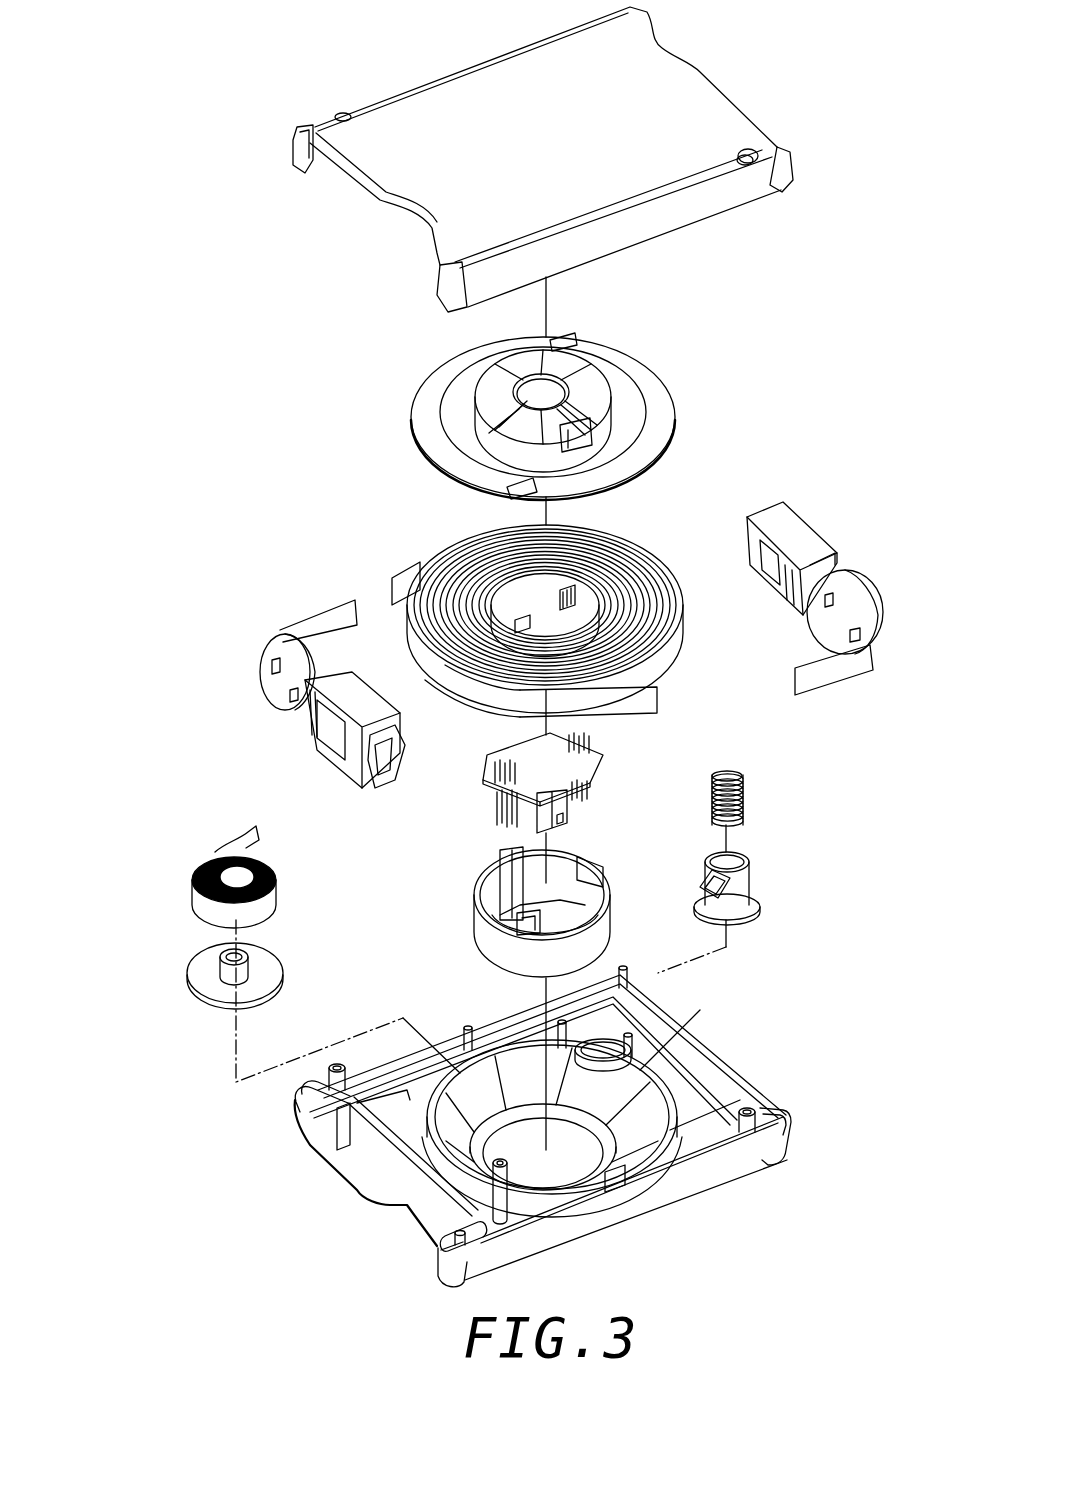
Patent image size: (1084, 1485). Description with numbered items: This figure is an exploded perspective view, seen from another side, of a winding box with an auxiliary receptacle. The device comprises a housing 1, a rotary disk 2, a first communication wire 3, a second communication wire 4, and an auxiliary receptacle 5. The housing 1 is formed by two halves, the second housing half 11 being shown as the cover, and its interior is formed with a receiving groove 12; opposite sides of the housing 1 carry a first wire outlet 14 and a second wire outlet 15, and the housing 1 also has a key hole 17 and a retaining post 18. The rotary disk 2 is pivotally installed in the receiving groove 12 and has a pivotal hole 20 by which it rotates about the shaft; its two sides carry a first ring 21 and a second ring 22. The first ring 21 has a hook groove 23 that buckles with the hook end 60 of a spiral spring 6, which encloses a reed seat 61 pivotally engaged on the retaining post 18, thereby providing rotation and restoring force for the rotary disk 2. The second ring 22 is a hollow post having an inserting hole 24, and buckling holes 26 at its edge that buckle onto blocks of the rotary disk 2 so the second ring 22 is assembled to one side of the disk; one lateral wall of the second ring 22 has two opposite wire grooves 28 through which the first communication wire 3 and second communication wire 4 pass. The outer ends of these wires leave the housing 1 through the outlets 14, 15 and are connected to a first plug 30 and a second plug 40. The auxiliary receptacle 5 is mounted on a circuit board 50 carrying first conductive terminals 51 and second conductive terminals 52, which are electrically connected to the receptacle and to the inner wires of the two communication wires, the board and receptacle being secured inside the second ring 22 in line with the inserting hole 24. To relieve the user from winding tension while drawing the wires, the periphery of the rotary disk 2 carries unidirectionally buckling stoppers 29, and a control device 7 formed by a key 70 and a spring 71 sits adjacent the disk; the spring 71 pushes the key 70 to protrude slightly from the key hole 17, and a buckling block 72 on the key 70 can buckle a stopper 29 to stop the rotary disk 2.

The housing 1 is at (525, 1121).
The rotary disk 2 is at (546, 419).
The first communication wire 3 is at (400, 580).
The second communication wire 4 is at (657, 697).
The auxiliary receptacle 5 is at (563, 820).
The spiral spring 6 is at (208, 842).
The control device 7 is at (784, 873).
The second housing half 11 is at (753, 113).
The receiving groove 12 is at (480, 1060).
The first wire outlet 14 is at (300, 1107).
The second wire outlet 15 is at (760, 1112).
The key hole 17 is at (605, 1050).
The retaining post 18 is at (503, 1177).
The pivotal hole 20 is at (577, 388).
The first ring 21 is at (480, 420).
The second ring 22 is at (532, 893).
The hook groove 23 is at (580, 435).
The inserting hole 24 is at (583, 920).
The buckling holes 26 is at (503, 853).
The wire grooves 28 is at (480, 903).
The stopper 29 is at (513, 490).
The first plug 30 is at (327, 735).
The second plug 40 is at (787, 527).
The circuit board 50 is at (557, 779).
The first conductive terminal 51 is at (497, 772).
The second conductive terminal 52 is at (590, 750).
The hook end 60 is at (245, 835).
The reed seat 61 is at (213, 980).
The key 70 is at (747, 923).
The spring 71 is at (745, 798).
The buckling block 72 is at (700, 887).